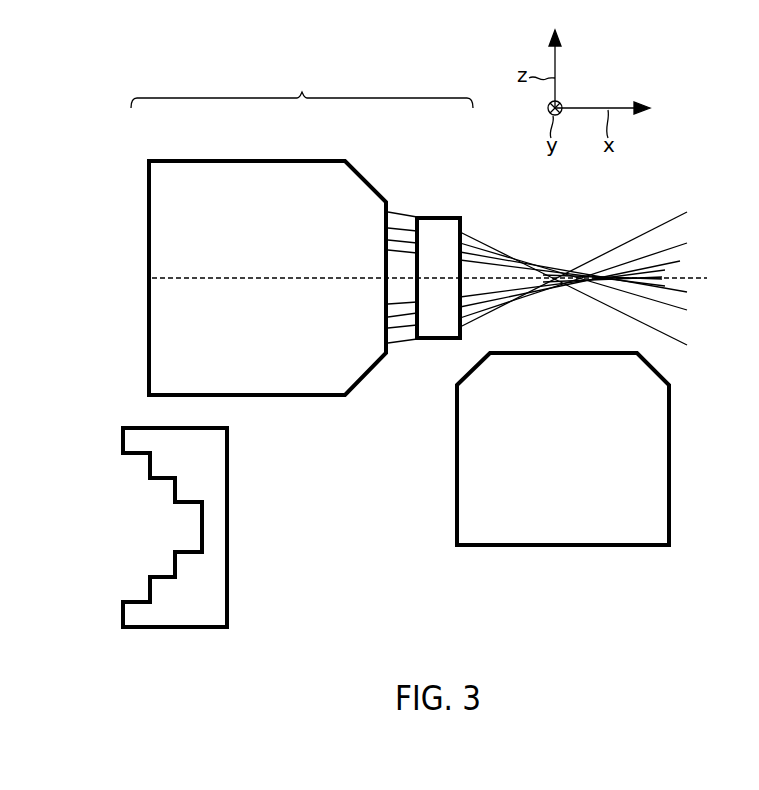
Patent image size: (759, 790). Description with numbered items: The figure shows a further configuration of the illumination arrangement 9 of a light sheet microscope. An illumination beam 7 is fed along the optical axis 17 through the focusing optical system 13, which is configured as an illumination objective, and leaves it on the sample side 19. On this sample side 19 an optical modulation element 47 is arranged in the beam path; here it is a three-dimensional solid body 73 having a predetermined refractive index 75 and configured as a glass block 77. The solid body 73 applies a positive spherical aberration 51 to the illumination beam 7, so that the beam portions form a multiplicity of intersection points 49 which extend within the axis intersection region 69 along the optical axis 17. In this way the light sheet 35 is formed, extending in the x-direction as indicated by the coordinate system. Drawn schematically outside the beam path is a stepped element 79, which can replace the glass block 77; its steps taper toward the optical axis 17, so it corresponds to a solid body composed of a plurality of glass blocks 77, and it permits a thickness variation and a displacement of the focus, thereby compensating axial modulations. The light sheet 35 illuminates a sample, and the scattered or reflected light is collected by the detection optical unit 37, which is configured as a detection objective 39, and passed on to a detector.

The illumination arrangement 9 is at (302, 229).
The focusing optical system 13 is at (306, 243).
The sample side 19 is at (405, 180).
The illumination beam 7 is at (405, 358).
The optical modulation element 47 is at (462, 227).
The three-dimensional solid body 73 is at (315, 371).
The glass block 77 is at (453, 262).
The refractive index 75 is at (315, 371).
The stepped element 79 is at (220, 614).
The light sheet 35 is at (573, 267).
The positive spherical aberration 51 is at (573, 267).
The intersection points 49 is at (546, 293).
The axis intersection region 69 is at (592, 267).
The optical axis 17 is at (707, 281).
The detection optical unit 37 is at (512, 449).
The detection objective 39 is at (468, 517).